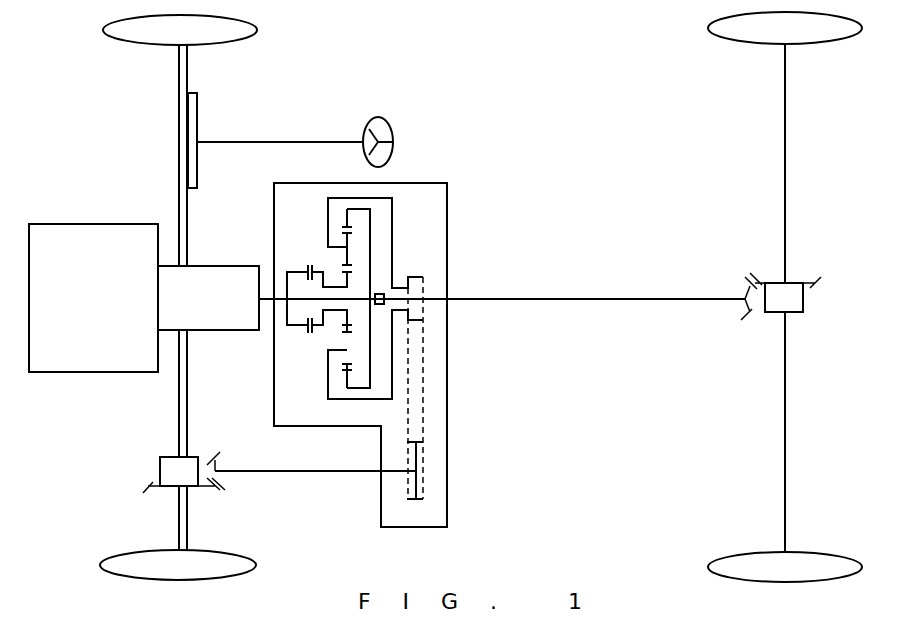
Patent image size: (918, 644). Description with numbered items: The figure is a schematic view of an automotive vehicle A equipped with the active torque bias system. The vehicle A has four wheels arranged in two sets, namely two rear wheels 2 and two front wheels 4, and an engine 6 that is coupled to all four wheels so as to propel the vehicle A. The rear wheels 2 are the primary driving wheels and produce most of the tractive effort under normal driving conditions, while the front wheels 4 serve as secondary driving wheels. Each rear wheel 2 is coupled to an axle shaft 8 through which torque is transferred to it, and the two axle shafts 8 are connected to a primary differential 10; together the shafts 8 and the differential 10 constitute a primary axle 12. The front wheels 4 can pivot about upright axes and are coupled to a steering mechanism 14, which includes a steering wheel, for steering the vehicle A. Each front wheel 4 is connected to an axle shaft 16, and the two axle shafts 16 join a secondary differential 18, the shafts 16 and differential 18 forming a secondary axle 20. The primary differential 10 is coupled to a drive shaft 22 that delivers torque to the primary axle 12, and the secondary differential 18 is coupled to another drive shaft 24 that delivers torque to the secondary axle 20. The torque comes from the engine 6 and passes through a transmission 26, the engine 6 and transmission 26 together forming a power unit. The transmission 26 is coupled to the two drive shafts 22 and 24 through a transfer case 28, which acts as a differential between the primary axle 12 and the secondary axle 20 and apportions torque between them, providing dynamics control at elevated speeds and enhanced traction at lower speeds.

The automotive vehicle A is at (104, 167).
The rear wheels 2 is at (807, 37).
The front wheels 4 is at (133, 37).
The engine 6 is at (65, 350).
The axle shaft 8 is at (785, 211).
The primary differential 10 is at (790, 297).
The primary axle 12 is at (785, 352).
The steering mechanism 14 is at (198, 127).
The axle shaft 16 is at (179, 163).
The secondary differential 18 is at (173, 470).
The secondary axle 20 is at (180, 440).
The drive shaft 22 is at (565, 299).
The drive shaft 24 is at (325, 473).
The transmission 26 is at (205, 317).
The transfer unit or case 28 is at (447, 453).